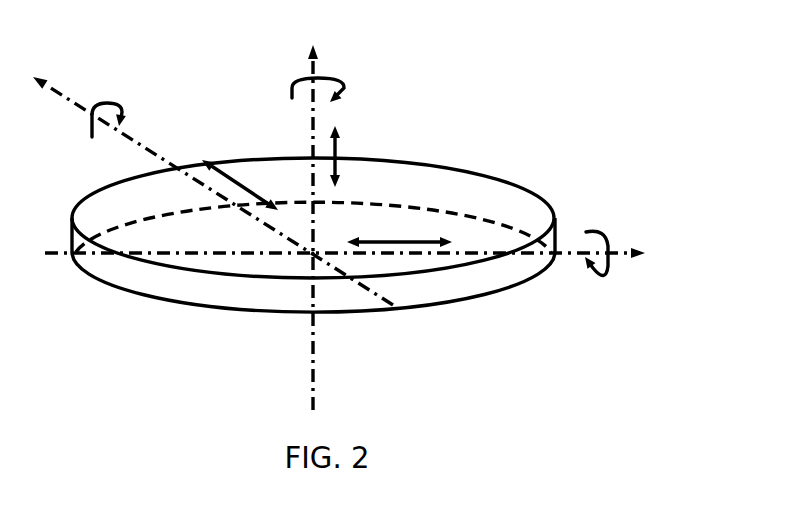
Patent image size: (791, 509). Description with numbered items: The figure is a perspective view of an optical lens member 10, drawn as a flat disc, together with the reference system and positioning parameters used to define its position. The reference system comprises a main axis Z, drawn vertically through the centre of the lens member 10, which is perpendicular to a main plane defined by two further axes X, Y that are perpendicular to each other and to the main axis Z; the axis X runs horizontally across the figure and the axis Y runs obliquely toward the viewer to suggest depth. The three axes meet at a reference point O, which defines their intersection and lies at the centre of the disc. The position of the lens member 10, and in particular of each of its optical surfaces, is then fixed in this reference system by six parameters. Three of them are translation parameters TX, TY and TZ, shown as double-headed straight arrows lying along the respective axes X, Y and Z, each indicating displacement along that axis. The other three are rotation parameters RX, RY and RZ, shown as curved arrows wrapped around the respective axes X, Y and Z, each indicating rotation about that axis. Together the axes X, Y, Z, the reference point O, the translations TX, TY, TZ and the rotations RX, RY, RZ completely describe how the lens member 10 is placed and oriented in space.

The lens member 10 is at (448, 148).
The axis X is at (353, 238).
The axis Y is at (213, 174).
The main axis Z is at (297, 218).
The reference point O is at (324, 228).
The translation parameter TX is at (399, 224).
The translation parameter TY is at (240, 165).
The translation parameter TZ is at (352, 154).
The rotation parameter RX is at (598, 274).
The rotation parameter RY is at (87, 133).
The rotation parameter RZ is at (335, 80).